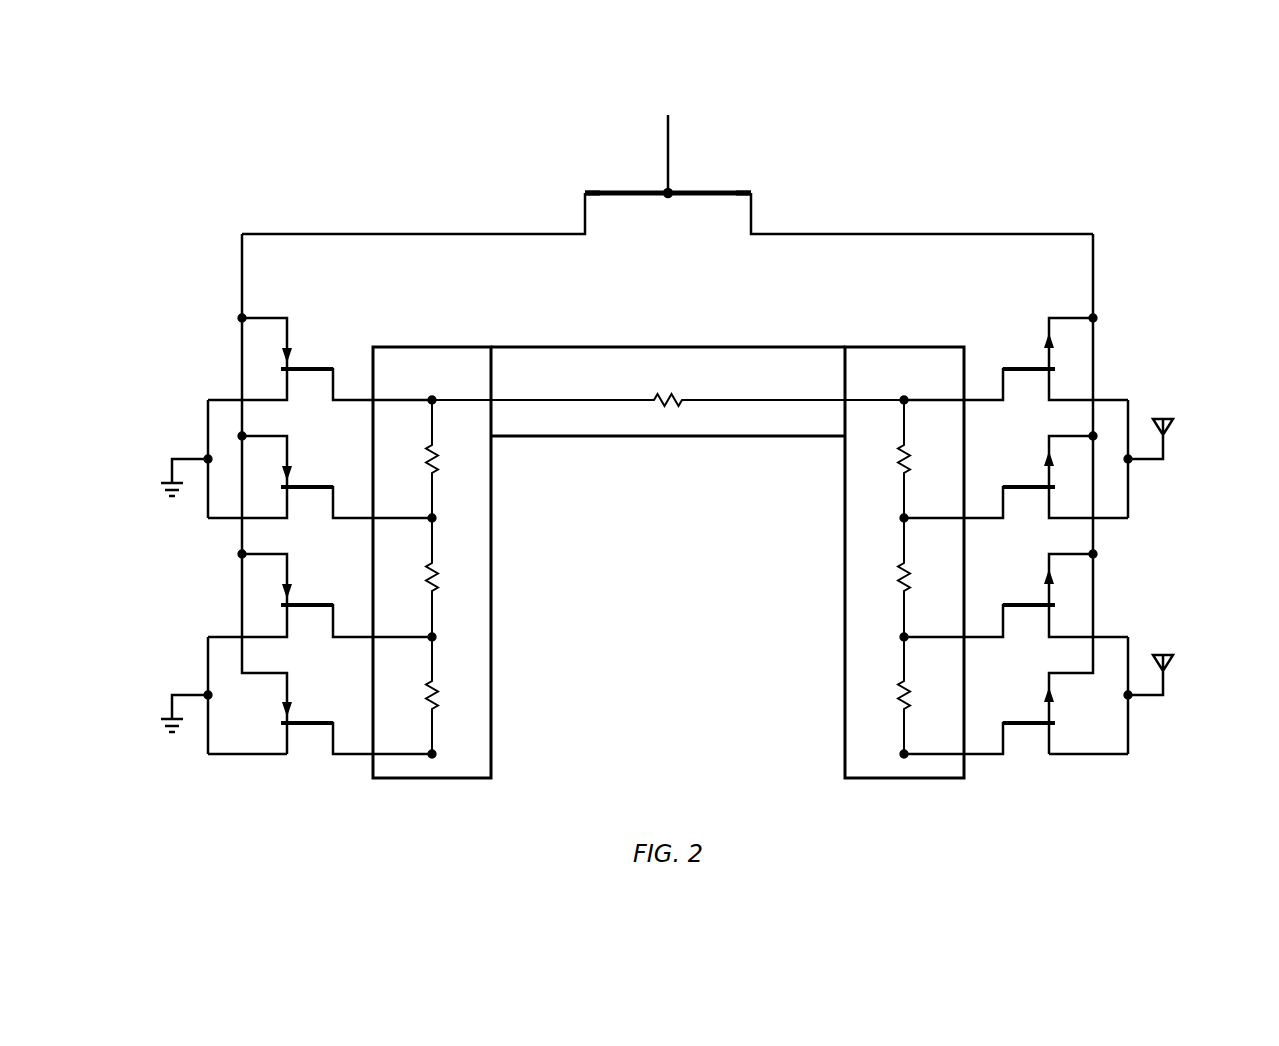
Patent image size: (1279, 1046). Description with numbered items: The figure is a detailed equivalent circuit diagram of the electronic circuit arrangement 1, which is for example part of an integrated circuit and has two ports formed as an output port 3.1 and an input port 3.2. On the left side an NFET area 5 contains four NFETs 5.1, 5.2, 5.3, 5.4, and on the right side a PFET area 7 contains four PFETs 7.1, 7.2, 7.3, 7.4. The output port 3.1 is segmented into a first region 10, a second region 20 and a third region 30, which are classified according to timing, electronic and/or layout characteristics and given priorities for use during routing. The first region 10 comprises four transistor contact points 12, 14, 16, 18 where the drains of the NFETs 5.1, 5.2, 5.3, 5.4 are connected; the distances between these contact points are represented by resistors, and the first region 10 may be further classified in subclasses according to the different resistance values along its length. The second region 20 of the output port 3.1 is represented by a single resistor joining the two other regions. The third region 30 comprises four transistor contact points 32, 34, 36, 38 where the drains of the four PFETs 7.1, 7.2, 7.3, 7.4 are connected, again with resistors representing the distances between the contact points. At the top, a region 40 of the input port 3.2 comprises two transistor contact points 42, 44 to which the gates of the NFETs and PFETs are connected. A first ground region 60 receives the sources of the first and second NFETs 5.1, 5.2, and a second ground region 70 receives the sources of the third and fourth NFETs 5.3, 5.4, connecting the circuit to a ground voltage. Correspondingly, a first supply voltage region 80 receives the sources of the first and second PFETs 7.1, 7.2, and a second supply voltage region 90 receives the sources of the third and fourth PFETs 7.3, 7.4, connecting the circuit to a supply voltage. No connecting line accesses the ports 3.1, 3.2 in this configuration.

The electronic circuit arrangement 1 is at (283, 127).
The output port 3.1 is at (632, 325).
The input port 3.2 is at (708, 118).
The NFET area 5 is at (195, 222).
The first NFET 5.1 is at (230, 352).
The second NFET 5.2 is at (195, 537).
The third NFET 5.3 is at (232, 625).
The fourth NFET 5.4 is at (272, 772).
The PFET area 7 is at (1143, 200).
The first PFET 7.1 is at (1105, 352).
The second PFET 7.2 is at (1143, 537).
The third PFET 7.3 is at (1105, 625).
The fourth PFET 7.4 is at (1065, 772).
The first region 10 is at (418, 780).
The transistor contact point 12 is at (430, 750).
The transistor contact point 14 is at (430, 633).
The transistor contact point 16 is at (430, 514).
The transistor contact point 18 is at (430, 404).
The second region 20 is at (668, 440).
The third region 30 is at (912, 780).
The transistor contact point 32 is at (906, 750).
The transistor contact point 34 is at (906, 633).
The transistor contact point 36 is at (906, 514).
The transistor contact point 38 is at (906, 404).
The region of the input port 40 is at (625, 145).
The transistor contact point 42 is at (585, 190).
The transistor contact point 44 is at (751, 190).
The first ground region 60 is at (143, 412).
The second ground region 70 is at (186, 711).
The first supply voltage region 80 is at (1192, 412).
The second supply voltage region 90 is at (1148, 677).